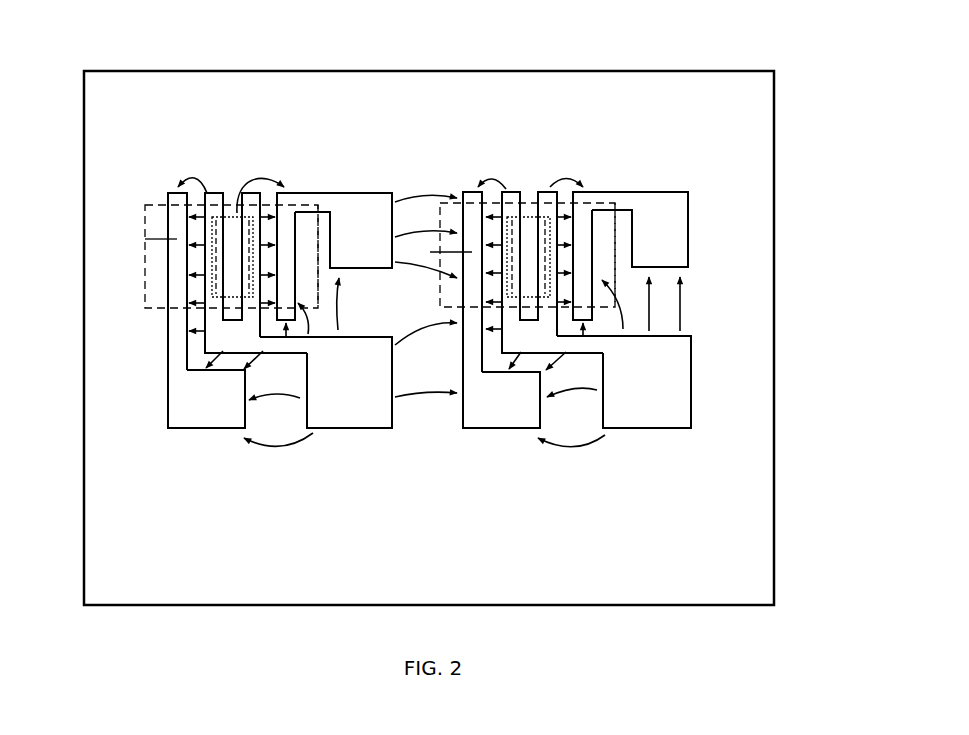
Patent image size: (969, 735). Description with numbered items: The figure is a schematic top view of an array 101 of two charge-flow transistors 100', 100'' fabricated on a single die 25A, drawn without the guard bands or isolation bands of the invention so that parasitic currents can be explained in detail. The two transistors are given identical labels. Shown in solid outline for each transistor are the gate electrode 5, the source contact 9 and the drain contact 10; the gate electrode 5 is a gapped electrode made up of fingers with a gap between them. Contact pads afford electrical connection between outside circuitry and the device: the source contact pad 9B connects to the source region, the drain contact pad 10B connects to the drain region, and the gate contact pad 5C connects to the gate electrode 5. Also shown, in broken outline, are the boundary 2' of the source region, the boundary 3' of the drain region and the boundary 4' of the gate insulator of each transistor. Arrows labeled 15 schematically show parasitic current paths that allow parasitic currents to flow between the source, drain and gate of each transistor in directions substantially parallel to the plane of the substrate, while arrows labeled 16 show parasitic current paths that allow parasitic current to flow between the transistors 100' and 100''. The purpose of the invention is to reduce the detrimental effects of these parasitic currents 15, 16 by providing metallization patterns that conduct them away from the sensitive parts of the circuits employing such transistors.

The die 25A is at (715, 70).
The array 101 is at (762, 516).
The charge-flow transistor 100' is at (219, 366).
The charge-flow transistor 100'' is at (516, 366).
The source contact pad 9B is at (178, 388).
The gate contact pad 5C is at (377, 416).
The gate electrode 5 is at (284, 346).
The drain contact pad 10B is at (363, 202).
The drain contact 10 is at (285, 273).
The source contact 9 is at (145, 239).
The boundary of source region 2' is at (270, 220).
The boundary of drain region 3' is at (466, 216).
The boundary of gate insulator 4' is at (381, 212).
The parasitic current paths 15 is at (180, 181).
The parasitic current paths 16 is at (420, 273).